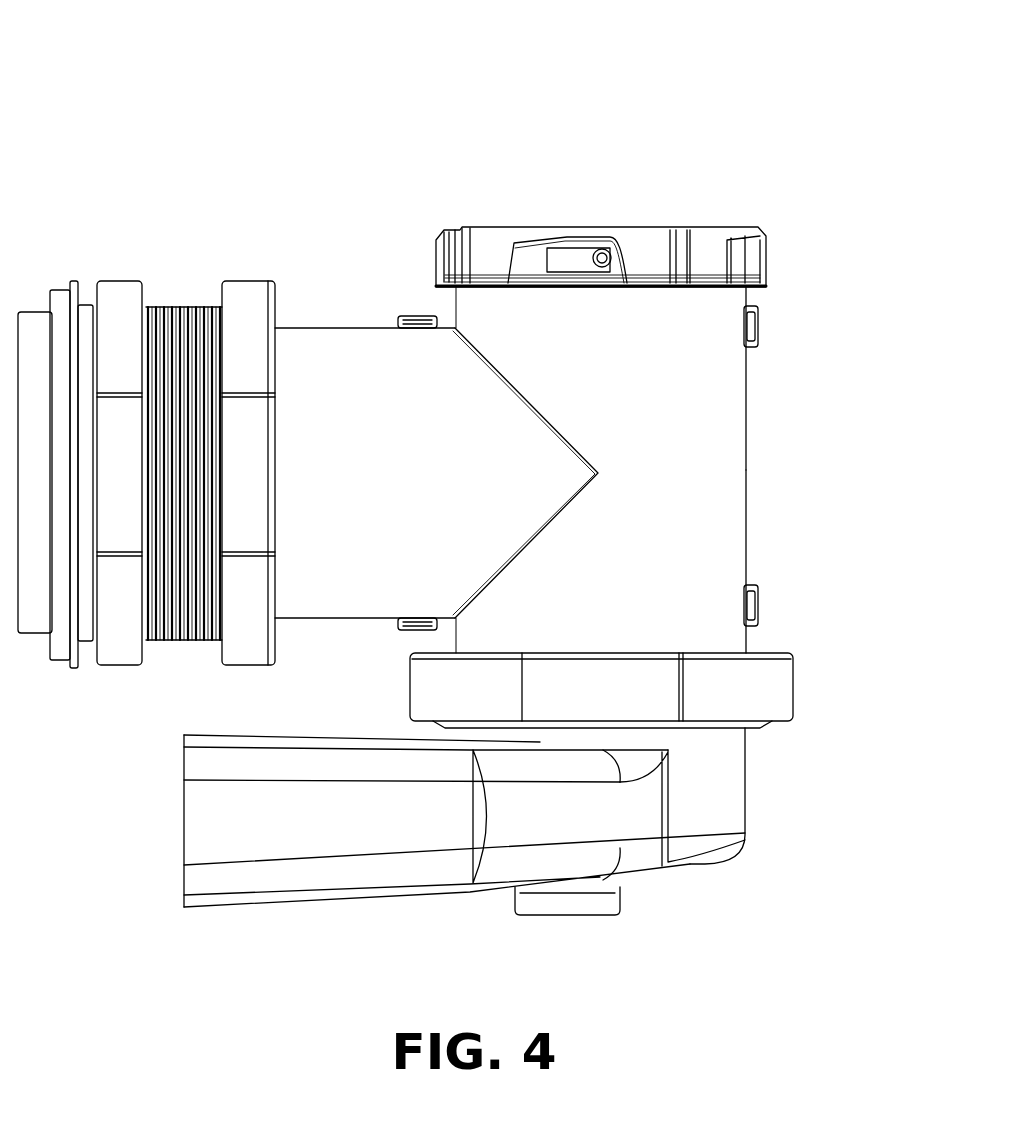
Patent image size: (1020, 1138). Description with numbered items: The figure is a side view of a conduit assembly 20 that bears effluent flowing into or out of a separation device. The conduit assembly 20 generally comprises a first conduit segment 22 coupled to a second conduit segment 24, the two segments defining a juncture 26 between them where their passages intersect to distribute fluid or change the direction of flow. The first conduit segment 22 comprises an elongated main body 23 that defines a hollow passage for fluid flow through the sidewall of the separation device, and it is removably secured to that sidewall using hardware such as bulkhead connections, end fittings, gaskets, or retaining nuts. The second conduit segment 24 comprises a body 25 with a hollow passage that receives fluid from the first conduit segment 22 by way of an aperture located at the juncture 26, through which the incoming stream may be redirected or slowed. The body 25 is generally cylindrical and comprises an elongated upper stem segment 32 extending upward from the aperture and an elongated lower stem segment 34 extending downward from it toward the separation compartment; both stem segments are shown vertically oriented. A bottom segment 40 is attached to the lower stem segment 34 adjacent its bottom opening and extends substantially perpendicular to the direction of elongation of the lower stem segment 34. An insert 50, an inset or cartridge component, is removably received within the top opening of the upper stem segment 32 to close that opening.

The conduit assembly 20 is at (113, 136).
The first conduit segment 22 is at (314, 360).
The elongated main body 23 is at (380, 330).
The second conduit segment 24 is at (727, 460).
The body 25 is at (745, 424).
The juncture 26 is at (601, 489).
The upper stem segment 32 is at (712, 362).
The lower stem segment 34 is at (700, 630).
The bottom segment 40 is at (350, 876).
The insert 50 is at (425, 251).